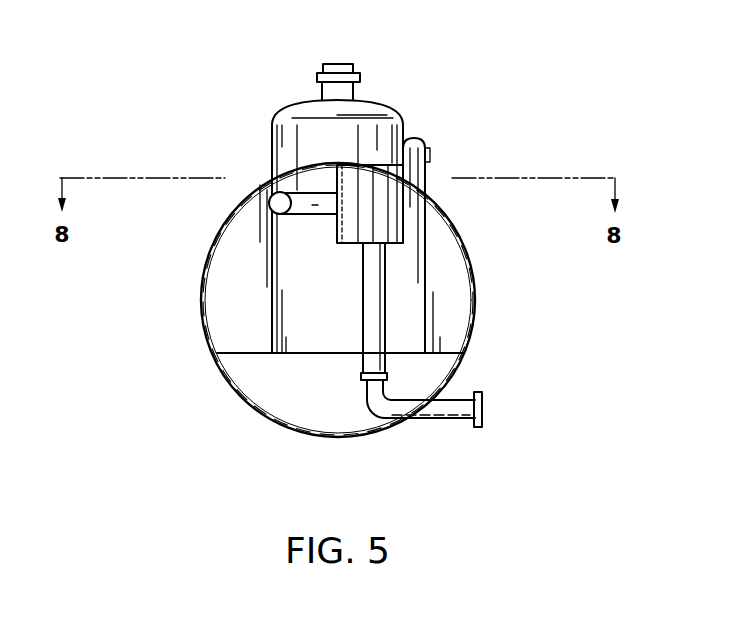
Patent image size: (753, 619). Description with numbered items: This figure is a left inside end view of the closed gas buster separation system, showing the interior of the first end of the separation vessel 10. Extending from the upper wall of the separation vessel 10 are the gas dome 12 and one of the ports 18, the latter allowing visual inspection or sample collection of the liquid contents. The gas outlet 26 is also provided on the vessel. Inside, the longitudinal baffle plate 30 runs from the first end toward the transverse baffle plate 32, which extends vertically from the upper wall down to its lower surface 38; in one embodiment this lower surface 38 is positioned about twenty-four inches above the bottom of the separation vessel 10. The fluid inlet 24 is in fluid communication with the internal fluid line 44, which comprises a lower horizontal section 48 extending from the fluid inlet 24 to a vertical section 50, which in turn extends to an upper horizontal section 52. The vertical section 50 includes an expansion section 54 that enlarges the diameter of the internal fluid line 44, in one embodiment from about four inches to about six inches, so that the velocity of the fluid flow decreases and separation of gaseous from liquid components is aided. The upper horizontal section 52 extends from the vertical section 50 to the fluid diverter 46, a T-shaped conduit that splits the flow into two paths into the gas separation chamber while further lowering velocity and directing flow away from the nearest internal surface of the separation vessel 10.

The separation vessel 10 is at (208, 58).
The gas dome 12 is at (398, 114).
The port 18 is at (420, 140).
The fluid inlet 24 is at (483, 408).
The gas outlet 26 is at (337, 64).
The longitudinal baffle plate 30 is at (405, 230).
The transverse baffle plate 32 is at (450, 288).
The lower surface 38 is at (255, 355).
The internal fluid line 44 is at (387, 273).
The fluid diverter 46 is at (280, 203).
The lower horizontal section 48 is at (403, 400).
The vertical section 50 is at (362, 333).
The upper horizontal section 52 is at (315, 193).
The expansion section 54 is at (389, 378).